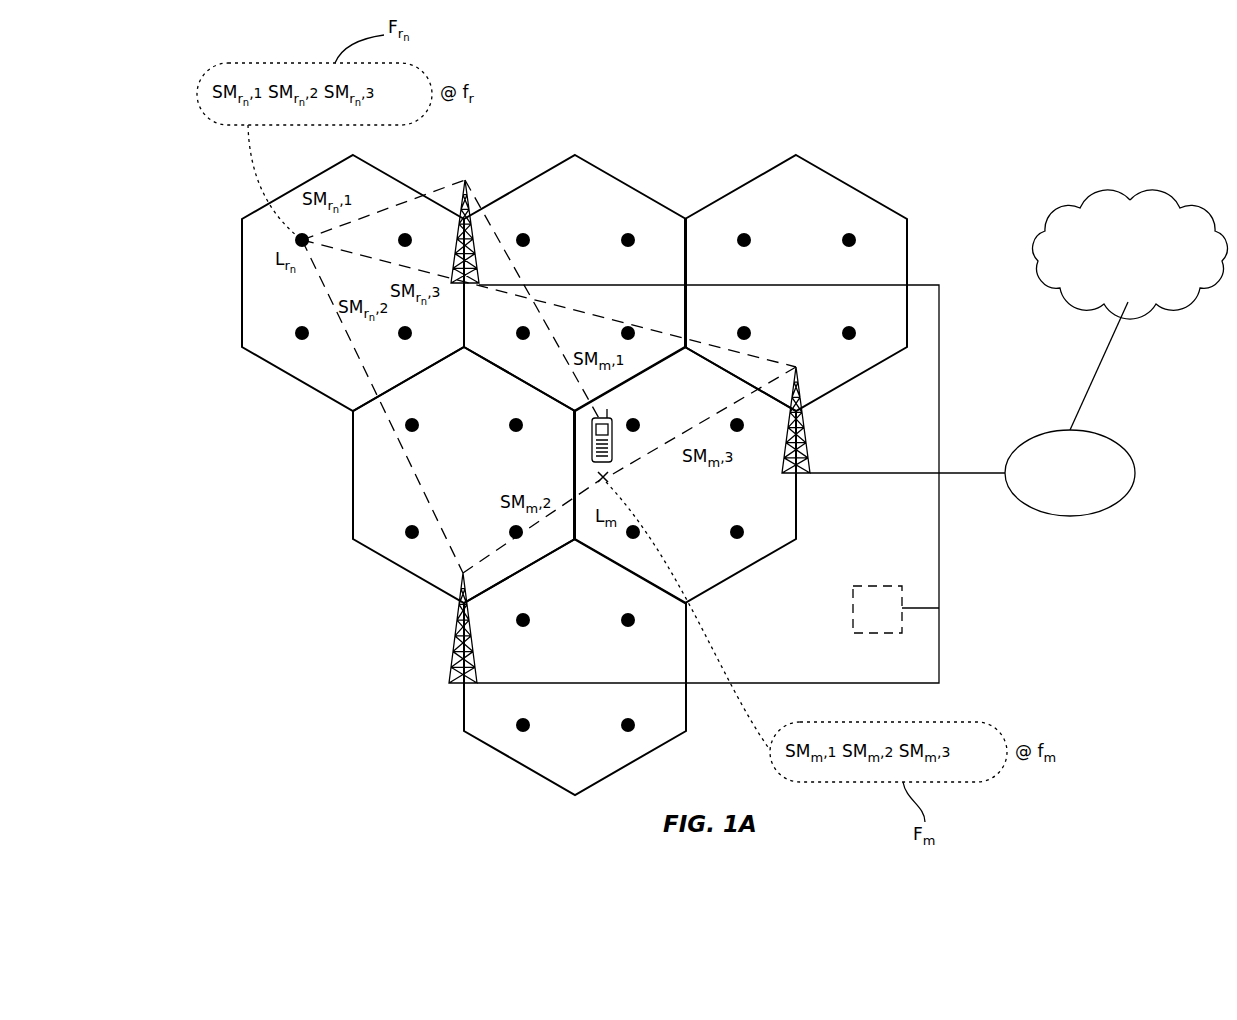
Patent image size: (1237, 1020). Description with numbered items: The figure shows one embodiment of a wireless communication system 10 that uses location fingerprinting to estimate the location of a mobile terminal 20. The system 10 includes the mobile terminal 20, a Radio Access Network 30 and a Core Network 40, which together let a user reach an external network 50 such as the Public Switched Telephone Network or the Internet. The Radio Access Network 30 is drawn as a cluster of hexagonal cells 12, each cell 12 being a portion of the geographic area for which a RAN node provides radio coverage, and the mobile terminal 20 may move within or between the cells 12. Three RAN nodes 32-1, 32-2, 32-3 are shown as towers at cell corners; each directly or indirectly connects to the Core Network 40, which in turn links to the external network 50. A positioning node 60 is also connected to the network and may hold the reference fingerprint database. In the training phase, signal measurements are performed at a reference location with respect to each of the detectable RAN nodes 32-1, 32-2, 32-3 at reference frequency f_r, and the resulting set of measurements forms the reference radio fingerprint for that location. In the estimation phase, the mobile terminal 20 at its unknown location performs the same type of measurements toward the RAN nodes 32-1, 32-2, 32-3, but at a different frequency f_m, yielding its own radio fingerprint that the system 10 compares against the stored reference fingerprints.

The wireless communication system 10 is at (692, 125).
The cell 12 is at (858, 192).
The mobile terminal 20 is at (612, 458).
The Radio Access Network 30 is at (293, 463).
The RAN node 32-1 is at (464, 180).
The RAN node 32-2 is at (456, 652).
The RAN node 32-3 is at (806, 458).
The Core Network 40 is at (1070, 409).
The external network 50 is at (1130, 254).
The positioning node 60 is at (876, 633).